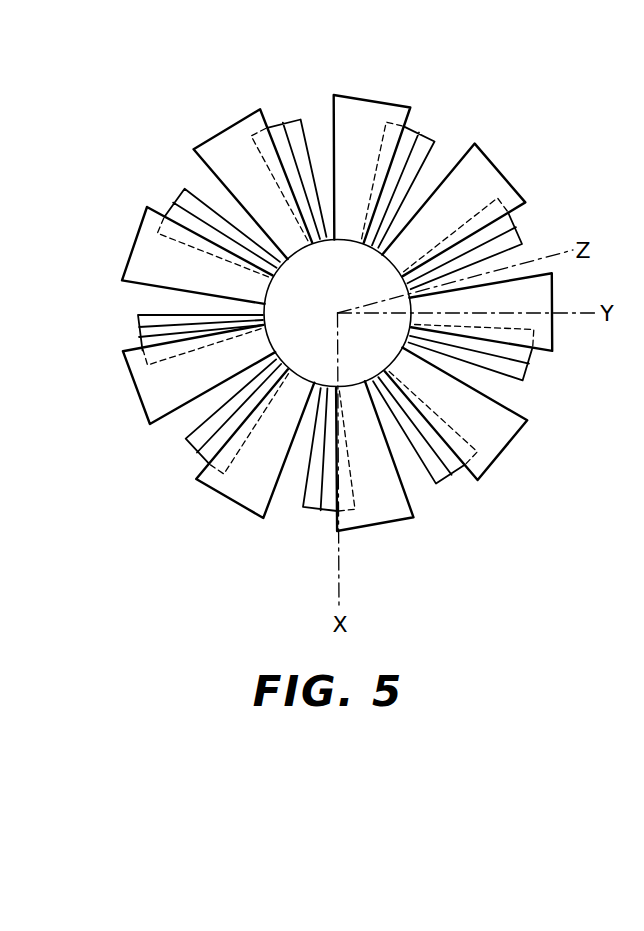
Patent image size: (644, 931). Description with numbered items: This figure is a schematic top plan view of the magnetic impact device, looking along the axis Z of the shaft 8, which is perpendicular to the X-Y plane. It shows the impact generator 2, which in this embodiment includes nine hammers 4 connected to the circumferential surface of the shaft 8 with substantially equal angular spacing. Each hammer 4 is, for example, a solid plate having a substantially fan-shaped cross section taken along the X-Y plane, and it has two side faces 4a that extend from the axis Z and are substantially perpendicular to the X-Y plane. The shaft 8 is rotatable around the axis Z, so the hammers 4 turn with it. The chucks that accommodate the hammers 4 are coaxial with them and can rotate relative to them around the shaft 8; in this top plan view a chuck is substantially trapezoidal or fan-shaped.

The impact generator 2 is at (117, 291).
The hammer 4 is at (425, 138).
The side face 4a is at (152, 314).
The shaft 8 is at (310, 285).